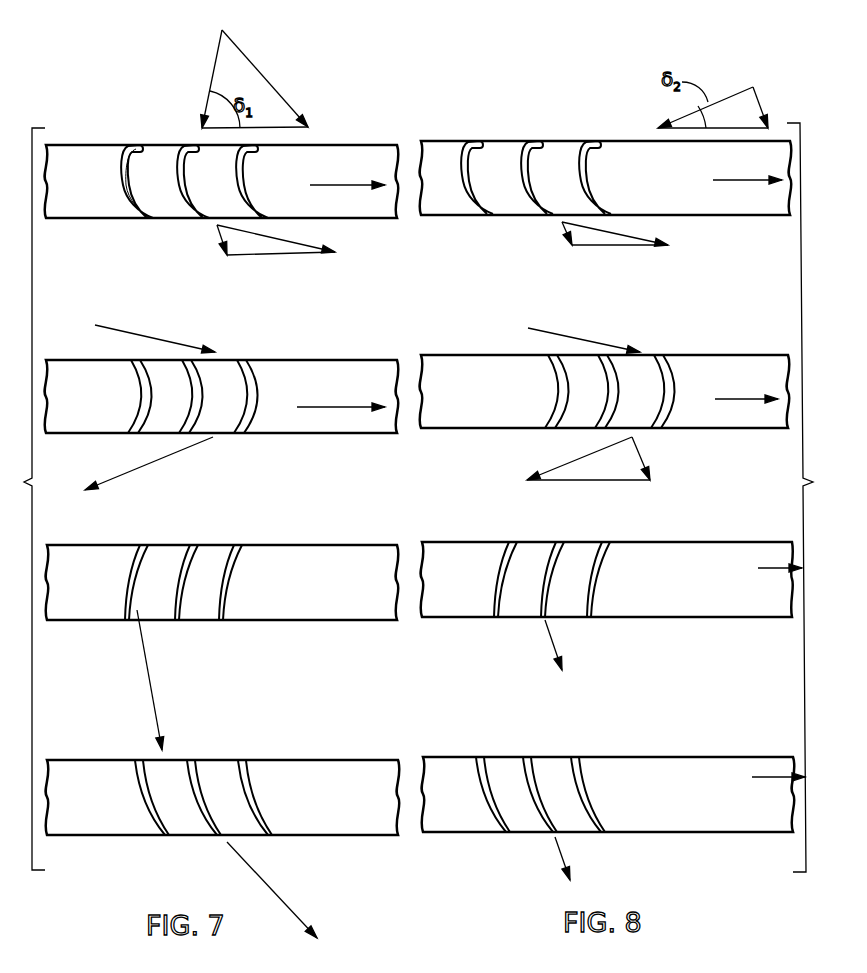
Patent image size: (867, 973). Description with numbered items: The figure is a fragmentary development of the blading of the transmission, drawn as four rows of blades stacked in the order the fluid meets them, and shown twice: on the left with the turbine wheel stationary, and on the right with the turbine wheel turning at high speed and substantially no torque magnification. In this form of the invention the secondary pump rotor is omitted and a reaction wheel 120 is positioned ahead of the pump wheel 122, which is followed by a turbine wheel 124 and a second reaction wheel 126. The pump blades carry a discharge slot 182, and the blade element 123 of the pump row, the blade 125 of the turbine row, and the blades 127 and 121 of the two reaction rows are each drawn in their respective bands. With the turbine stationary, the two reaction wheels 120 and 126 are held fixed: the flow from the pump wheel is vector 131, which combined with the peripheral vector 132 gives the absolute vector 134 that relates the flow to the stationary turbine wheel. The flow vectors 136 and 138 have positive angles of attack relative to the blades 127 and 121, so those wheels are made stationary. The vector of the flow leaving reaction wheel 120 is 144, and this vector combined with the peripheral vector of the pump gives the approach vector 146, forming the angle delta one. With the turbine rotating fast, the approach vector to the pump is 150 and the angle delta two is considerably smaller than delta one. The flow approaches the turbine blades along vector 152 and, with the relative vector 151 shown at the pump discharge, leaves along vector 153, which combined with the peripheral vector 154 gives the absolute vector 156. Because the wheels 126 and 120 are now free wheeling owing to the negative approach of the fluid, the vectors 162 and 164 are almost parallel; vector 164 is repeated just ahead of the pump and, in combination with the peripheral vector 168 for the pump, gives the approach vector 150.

In FIG. 7, the reaction wheel 120 is at (223, 797).
In FIG. 8, the reaction wheel 120 is at (613, 794).
In FIG. 7, the blades 121 is at (135, 780).
In FIG. 8, the blades 121 is at (592, 777).
In FIG. 7, the pump wheel 122 is at (222, 181).
In FIG. 8, the pump wheel 122 is at (606, 178).
In FIG. 7, the stator blade 123 is at (123, 190).
In FIG. 8, the stator blade 123 is at (536, 177).
In FIG. 7, the turbine wheel 124 is at (222, 396).
In FIG. 8, the turbine wheel 124 is at (605, 391).
In FIG. 7, the rotor blade 125 is at (137, 377).
In FIG. 8, the rotor blade 125 is at (610, 391).
In FIG. 7, the reaction wheel 126 is at (222, 582).
In FIG. 8, the reaction wheel 126 is at (735, 611).
In FIG. 7, the blades 127 is at (140, 551).
In FIG. 8, the blades 127 is at (500, 551).
In FIG. 7, the flow from the pump wheel 131 is at (220, 236).
In FIG. 7, the peripheral vector 132 is at (262, 254).
In FIG. 8, the peripheral vector 132 is at (604, 246).
In FIG. 7, the absolute vector 134 is at (276, 238).
In FIG. 7, the flow vector 136 is at (177, 453).
In FIG. 7, the flow vector 138 is at (143, 636).
In FIG. 7, the vector of flow leaving reaction wheel 144 is at (268, 82).
In FIG. 7, the approach vector 146 is at (212, 70).
In FIG. 8, the approach vector 150 is at (730, 97).
In FIG. 8, the relative velocity vector 151 is at (566, 231).
In FIG. 8, the vector 152 is at (636, 238).
In FIG. 8, the vector 153 is at (575, 458).
In FIG. 8, the peripheral vector 154 is at (567, 482).
In FIG. 8, the absolute vector 156 is at (645, 463).
In FIG. 8, the vector 162 is at (562, 646).
In FIG. 8, the vector 164 is at (761, 110).
In FIG. 8, the peripheral vector 168 is at (720, 129).
In FIG. 7, the discharge slot 182 is at (123, 153).